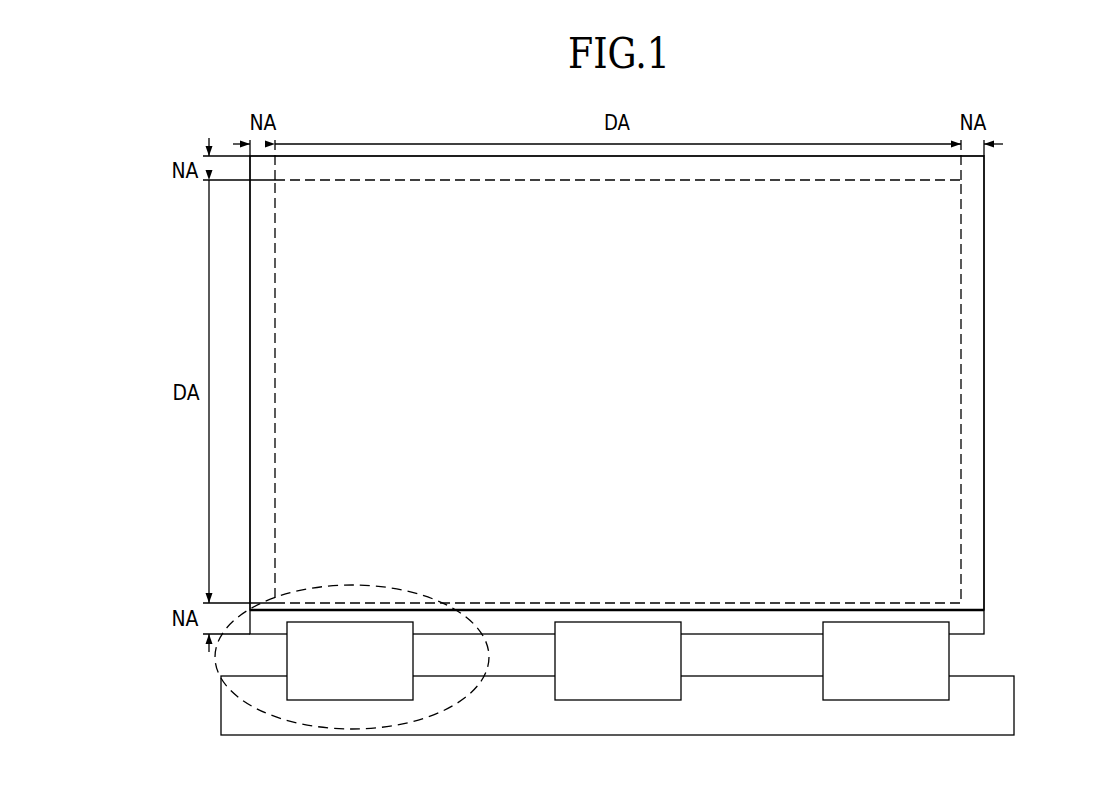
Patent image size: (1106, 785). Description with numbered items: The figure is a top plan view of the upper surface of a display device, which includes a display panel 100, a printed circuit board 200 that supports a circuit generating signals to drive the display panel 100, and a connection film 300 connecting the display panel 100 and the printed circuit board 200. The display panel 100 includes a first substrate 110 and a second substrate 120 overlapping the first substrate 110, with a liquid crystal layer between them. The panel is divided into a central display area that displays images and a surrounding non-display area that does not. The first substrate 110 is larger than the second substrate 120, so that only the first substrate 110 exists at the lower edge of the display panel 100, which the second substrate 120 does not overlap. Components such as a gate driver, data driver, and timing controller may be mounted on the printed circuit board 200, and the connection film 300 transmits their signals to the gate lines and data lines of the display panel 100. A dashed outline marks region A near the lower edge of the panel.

The display panel 100 is at (672, 397).
The first substrate 110 is at (986, 620).
The second substrate 120 is at (986, 586).
The printed circuit board 200 is at (1014, 714).
The connection film 300 is at (950, 658).
The region A is at (210, 668).